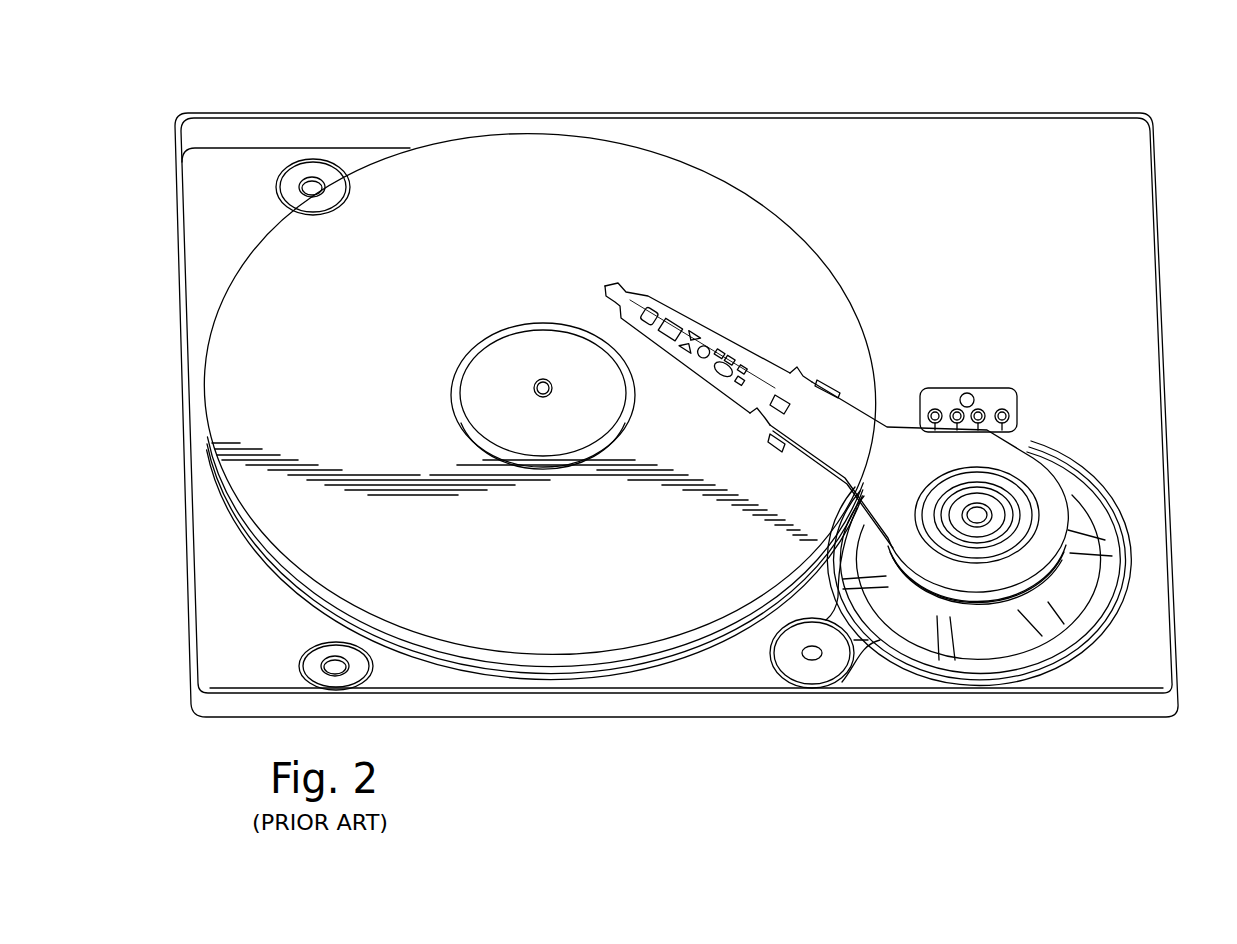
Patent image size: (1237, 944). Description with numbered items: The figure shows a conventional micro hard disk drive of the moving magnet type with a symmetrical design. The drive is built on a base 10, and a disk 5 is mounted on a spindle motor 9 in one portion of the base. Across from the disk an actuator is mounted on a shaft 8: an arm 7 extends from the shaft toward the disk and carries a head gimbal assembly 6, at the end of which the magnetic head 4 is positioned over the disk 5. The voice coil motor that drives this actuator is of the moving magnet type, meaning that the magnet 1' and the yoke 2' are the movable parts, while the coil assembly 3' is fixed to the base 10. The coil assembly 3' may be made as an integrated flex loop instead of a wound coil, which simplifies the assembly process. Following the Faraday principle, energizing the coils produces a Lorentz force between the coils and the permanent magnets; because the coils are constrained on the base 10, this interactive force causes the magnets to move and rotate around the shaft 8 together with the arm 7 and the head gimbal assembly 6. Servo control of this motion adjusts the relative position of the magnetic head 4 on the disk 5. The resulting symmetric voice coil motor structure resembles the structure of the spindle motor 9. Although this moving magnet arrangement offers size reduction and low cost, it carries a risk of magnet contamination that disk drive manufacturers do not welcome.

The magnet 1' is at (977, 672).
The yoke 2' is at (990, 675).
The coil assembly 3' is at (953, 620).
The magnetic head 4 is at (653, 298).
The disk 5 is at (529, 260).
The head gimbal assembly 6 is at (767, 395).
The arm 7 is at (888, 428).
The shaft 8 is at (978, 513).
The spindle motor 9 is at (540, 383).
The base 10 is at (623, 703).